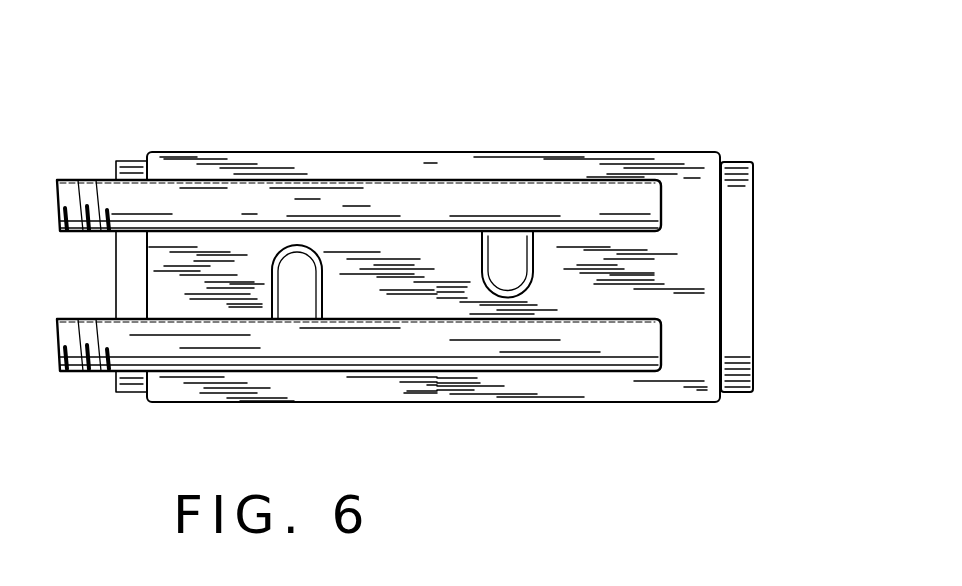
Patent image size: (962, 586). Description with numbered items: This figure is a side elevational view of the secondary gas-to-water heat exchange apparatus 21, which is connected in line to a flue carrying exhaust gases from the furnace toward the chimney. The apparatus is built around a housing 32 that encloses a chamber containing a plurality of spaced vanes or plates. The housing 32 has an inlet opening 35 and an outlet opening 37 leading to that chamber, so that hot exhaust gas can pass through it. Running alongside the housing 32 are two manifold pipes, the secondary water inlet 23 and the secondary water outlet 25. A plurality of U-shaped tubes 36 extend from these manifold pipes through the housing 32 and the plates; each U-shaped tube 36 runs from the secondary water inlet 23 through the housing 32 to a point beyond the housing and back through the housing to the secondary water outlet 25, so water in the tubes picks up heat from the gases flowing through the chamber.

The secondary gas-to-water heat exchange apparatus 21 is at (178, 112).
The secondary water inlet 23 is at (72, 373).
The secondary water outlet 25 is at (376, 184).
The housing 32 is at (706, 402).
The inlet opening 35 is at (115, 166).
The U-shaped tube 36 is at (507, 240).
The outlet opening 37 is at (754, 181).